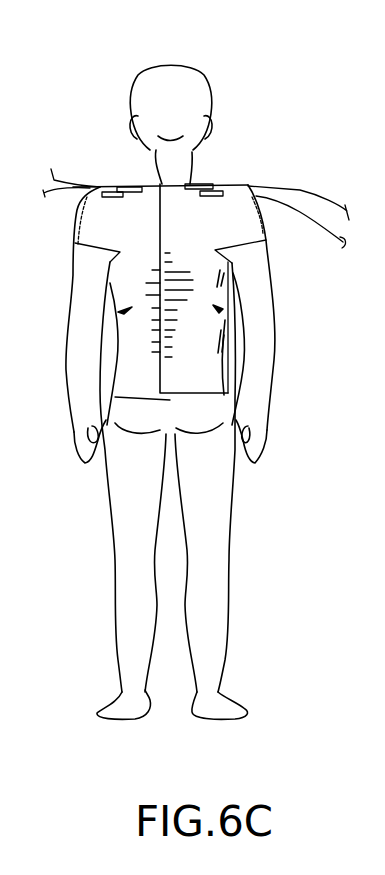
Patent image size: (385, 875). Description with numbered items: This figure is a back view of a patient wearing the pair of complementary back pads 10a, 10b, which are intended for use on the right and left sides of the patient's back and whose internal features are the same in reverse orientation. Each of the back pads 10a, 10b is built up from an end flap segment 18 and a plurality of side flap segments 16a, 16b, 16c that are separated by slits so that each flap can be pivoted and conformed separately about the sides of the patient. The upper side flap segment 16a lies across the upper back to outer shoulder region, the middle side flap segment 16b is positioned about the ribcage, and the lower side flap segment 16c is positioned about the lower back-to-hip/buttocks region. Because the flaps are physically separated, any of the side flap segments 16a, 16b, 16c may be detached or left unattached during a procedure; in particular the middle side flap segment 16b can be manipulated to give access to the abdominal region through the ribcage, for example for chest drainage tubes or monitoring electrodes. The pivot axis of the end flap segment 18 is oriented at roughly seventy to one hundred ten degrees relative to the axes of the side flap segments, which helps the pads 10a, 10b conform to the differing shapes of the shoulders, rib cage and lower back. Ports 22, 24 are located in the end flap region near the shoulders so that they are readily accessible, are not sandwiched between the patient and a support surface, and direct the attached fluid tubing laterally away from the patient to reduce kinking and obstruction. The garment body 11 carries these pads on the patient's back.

The back panel of garment 11 is at (164, 184).
The port 22 is at (108, 197).
The port 24 is at (132, 187).
The end flap segment 18 is at (128, 194).
The side flap segment 16a is at (82, 222).
The side flap segment 16b is at (127, 280).
The side flap segment 16c is at (128, 375).
The back pad 10b is at (118, 331).
The back pad 10a is at (233, 270).